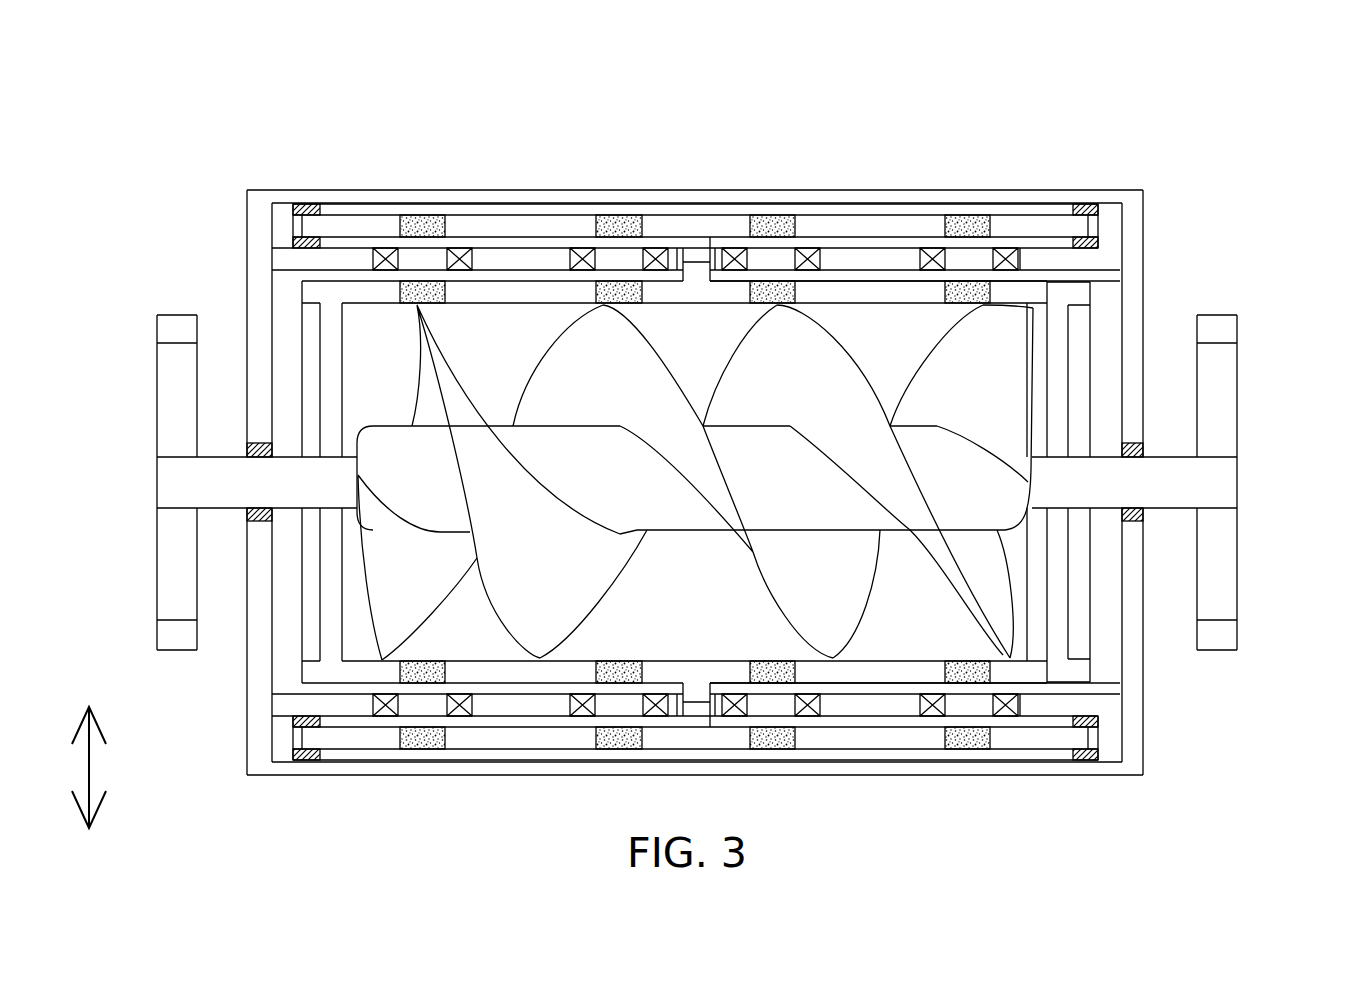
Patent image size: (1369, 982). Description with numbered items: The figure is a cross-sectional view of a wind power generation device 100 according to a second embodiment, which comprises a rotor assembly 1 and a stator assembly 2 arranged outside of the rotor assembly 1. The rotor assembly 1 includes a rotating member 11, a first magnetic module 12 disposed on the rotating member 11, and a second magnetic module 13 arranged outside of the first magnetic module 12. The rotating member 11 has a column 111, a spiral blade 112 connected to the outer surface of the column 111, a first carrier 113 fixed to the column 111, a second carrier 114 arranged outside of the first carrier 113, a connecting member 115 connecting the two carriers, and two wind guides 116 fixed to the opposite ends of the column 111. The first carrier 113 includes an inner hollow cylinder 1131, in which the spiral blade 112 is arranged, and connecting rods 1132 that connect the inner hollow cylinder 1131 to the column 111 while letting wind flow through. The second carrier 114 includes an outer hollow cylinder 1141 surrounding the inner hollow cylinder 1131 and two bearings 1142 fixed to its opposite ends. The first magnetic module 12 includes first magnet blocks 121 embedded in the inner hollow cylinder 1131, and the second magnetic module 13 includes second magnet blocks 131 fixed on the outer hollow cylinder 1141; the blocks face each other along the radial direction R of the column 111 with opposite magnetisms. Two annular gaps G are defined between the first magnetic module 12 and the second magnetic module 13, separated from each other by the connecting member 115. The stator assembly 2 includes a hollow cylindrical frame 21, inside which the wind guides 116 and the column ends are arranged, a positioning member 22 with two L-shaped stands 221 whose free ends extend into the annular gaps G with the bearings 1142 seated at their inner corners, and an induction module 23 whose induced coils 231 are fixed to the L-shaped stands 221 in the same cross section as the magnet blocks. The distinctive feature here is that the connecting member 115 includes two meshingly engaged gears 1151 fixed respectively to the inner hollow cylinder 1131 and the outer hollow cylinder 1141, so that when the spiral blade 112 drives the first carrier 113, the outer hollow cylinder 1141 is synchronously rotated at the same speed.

The wind power generation device 100 is at (124, 79).
The rotor assembly 1 is at (1123, 133).
The rotating member 11 is at (1093, 297).
The column 111 is at (690, 503).
The spiral blade 112 is at (596, 592).
The first carrier 113 is at (1290, 665).
The inner hollow cylinder 1131 is at (1078, 670).
The connecting rods 1132 is at (1057, 615).
The second carrier 114 is at (187, 105).
The outer hollow cylinder 1141 is at (357, 225).
The bearings 1142 is at (305, 207).
The connecting member 115 is at (812, 85).
The gears 1151 is at (698, 252).
The wind guides 116 is at (177, 325).
The first magnetic module 12 is at (997, 297).
The first magnet blocks 121 is at (420, 305).
The second magnetic module 13 is at (997, 217).
The second magnet blocks 131 is at (440, 222).
The stator assembly 2 is at (1163, 833).
The frame 21 is at (1012, 767).
The positioning member 22 is at (1113, 733).
The induction module 23 is at (1022, 700).
The induced coils 231 is at (475, 260).
The L-shaped stands 221 is at (303, 703).
The annular gap G is at (658, 243).
The radial direction R is at (79, 767).